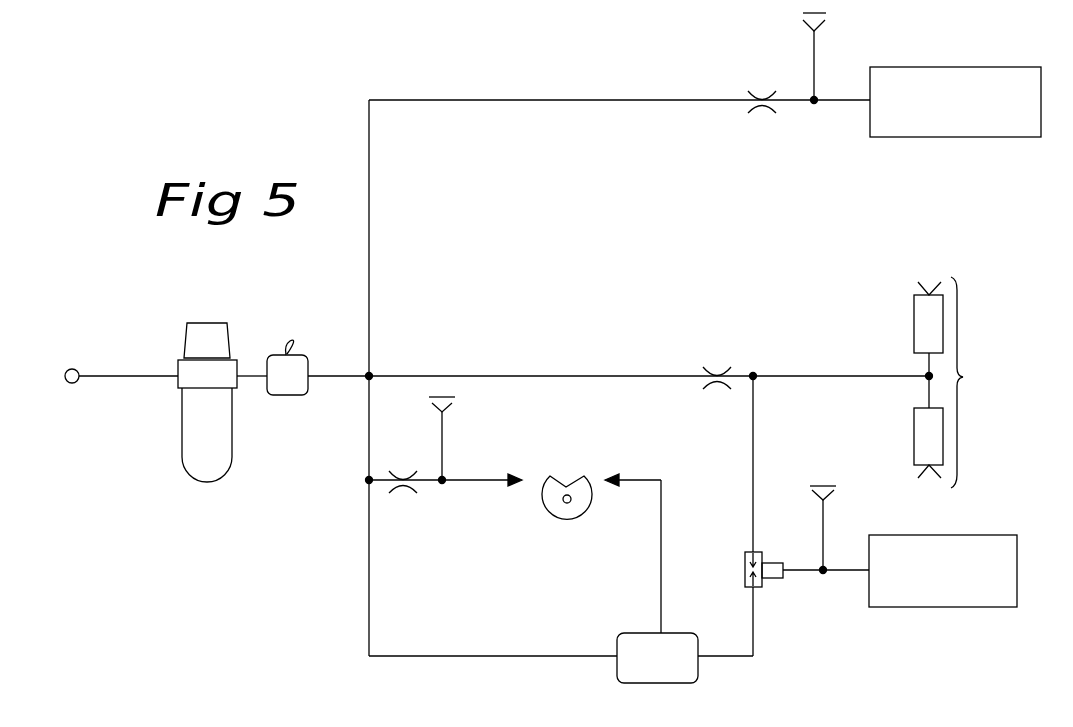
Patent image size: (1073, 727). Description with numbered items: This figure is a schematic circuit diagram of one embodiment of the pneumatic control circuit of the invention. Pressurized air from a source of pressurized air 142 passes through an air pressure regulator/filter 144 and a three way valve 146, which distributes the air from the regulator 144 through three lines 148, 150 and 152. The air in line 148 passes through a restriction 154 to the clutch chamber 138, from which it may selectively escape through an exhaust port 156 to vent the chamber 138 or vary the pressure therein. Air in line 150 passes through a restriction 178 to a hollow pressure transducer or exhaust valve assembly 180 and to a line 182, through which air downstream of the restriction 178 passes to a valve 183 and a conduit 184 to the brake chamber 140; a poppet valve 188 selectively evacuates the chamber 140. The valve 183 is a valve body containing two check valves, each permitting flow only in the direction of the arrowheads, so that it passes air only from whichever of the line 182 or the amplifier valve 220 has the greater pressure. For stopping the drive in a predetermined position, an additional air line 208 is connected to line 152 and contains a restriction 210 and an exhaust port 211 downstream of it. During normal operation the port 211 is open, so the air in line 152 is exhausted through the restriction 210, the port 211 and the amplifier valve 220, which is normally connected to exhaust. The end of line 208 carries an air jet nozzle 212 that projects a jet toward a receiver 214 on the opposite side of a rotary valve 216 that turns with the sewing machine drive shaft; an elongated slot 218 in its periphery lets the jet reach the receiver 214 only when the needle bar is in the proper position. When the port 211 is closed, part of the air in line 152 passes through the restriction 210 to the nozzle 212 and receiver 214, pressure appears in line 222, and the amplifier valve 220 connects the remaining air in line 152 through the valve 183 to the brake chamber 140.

The chamber 138 is at (966, 137).
The chamber 140 is at (968, 535).
The source of pressurized air 142 is at (72, 383).
The air pressure regulator/filter 144 is at (232, 462).
The three way valve 146 is at (305, 395).
The line 148 is at (369, 241).
The line 150 is at (590, 375).
The line 152 is at (369, 437).
The restriction 154 is at (758, 95).
The exhaust port 156 is at (815, 38).
The restriction 178 is at (719, 367).
The pressure transducer or exhaust valve assembly 180 is at (880, 382).
The line 182 is at (756, 414).
The valve 183 is at (766, 582).
The conduit 184 is at (850, 576).
The poppet valve 188 is at (825, 522).
The air line 208 is at (480, 478).
The restriction 210 is at (405, 488).
The exhaust port 211 is at (452, 397).
The air jet nozzle 212 is at (512, 486).
The receiver 214 is at (610, 477).
The rotary valve 216 is at (582, 520).
The elongated slot 218 is at (573, 484).
The amplifier valve 220 is at (698, 640).
The line 222 is at (661, 525).